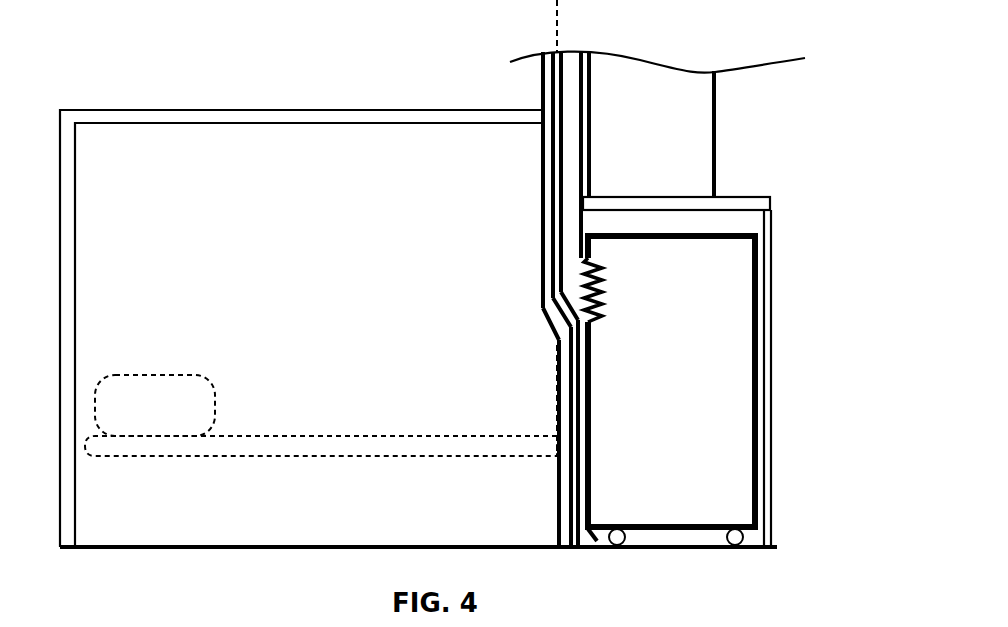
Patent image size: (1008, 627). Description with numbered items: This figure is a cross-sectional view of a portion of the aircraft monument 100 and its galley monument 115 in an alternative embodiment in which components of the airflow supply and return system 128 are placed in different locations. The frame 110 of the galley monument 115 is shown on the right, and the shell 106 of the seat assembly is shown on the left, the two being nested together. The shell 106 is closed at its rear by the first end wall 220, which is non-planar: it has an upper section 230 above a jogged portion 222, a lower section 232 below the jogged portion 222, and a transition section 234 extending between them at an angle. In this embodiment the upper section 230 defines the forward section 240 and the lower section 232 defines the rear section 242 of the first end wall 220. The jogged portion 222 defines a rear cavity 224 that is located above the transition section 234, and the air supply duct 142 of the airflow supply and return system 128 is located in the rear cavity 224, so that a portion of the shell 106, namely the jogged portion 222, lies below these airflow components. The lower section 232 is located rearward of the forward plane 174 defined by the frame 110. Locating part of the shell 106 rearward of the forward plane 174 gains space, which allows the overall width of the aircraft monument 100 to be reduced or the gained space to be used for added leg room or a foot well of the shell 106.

The aircraft monument 100 is at (791, 117).
The shell 106 is at (127, 91).
The frame 110 is at (718, 170).
The galley monument 115 is at (788, 240).
The airflow supply and return system 128 is at (568, 69).
The air supply duct 142 is at (578, 282).
The forward plane 174 is at (556, 370).
The first end wall 220 is at (543, 243).
The jogged portion 222 is at (542, 315).
The rear cavity 224 is at (569, 191).
The upper section 230 is at (540, 192).
The lower section 232 is at (574, 473).
The transition section 234 is at (571, 339).
The forward section 240 is at (543, 270).
The rear section 242 is at (570, 458).